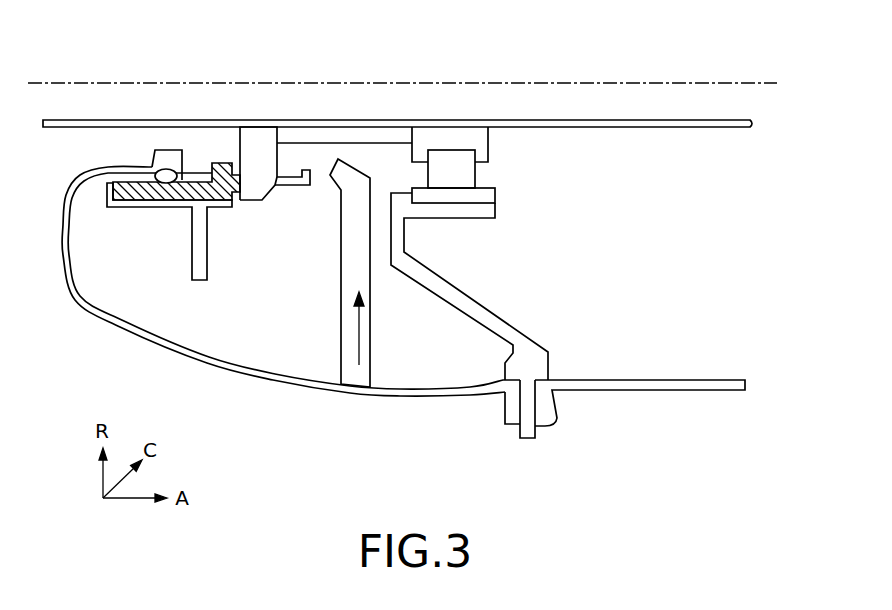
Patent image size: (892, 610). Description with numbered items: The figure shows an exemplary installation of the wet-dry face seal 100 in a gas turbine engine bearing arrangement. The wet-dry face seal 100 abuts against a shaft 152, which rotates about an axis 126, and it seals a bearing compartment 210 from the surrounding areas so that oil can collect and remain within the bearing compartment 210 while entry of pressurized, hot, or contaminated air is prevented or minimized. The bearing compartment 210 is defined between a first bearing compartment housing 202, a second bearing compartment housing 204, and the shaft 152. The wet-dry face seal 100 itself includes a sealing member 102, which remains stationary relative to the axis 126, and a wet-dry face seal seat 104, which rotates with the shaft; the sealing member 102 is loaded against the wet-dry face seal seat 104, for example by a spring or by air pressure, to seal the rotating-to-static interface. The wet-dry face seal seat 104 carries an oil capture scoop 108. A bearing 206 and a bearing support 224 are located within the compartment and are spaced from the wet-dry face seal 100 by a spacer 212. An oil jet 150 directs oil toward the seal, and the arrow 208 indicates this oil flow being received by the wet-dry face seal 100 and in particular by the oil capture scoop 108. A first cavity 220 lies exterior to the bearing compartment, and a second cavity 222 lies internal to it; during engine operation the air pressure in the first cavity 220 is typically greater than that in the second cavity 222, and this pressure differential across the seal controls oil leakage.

The wet-dry face seal 100 is at (250, 115).
The sealing member 102 is at (222, 203).
The wet-dry face seal seat 104 is at (264, 219).
The oil capture scoop 108 is at (289, 160).
The axis 126 is at (756, 83).
The oil jet 150 is at (370, 352).
The shaft 152 is at (752, 121).
The first bearing compartment housing 202 is at (122, 323).
The second bearing compartment housing 204 is at (650, 379).
The bearing 206 is at (447, 136).
The arrow 208 is at (360, 322).
The bearing compartment 210 is at (591, 206).
The spacer 212 is at (381, 130).
The first cavity 220 is at (59, 309).
The second cavity 222 is at (258, 344).
The bearing support 224 is at (456, 285).